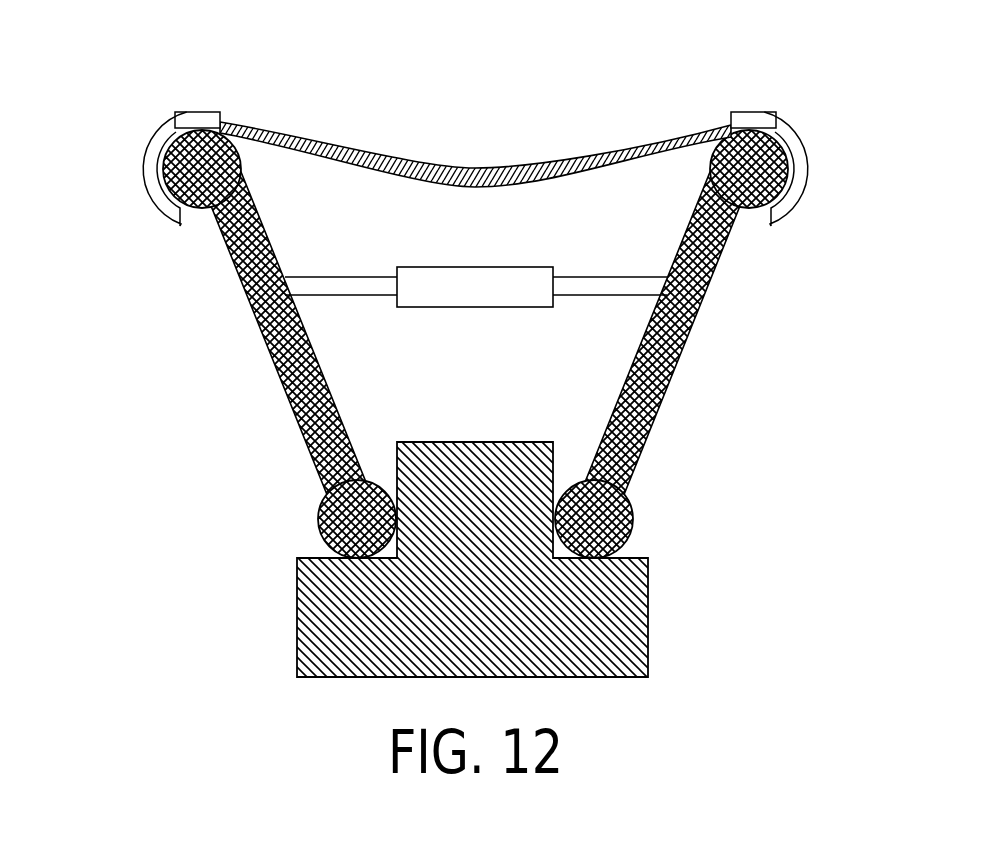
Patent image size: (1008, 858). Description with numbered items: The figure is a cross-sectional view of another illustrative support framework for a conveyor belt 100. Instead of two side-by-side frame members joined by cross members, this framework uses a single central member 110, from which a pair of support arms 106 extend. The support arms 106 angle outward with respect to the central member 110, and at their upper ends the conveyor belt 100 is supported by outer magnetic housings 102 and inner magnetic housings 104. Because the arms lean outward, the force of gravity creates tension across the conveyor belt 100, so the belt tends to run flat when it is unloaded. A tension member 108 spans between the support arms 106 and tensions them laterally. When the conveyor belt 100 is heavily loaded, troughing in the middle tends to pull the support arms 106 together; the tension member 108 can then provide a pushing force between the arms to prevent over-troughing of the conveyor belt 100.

The conveyor belt 100 is at (393, 158).
The outer magnetic housing 102 is at (162, 208).
The inner magnetic housing 104 is at (175, 133).
The support arm 106 is at (257, 315).
The tension member 108 is at (433, 285).
The central member 110 is at (345, 602).